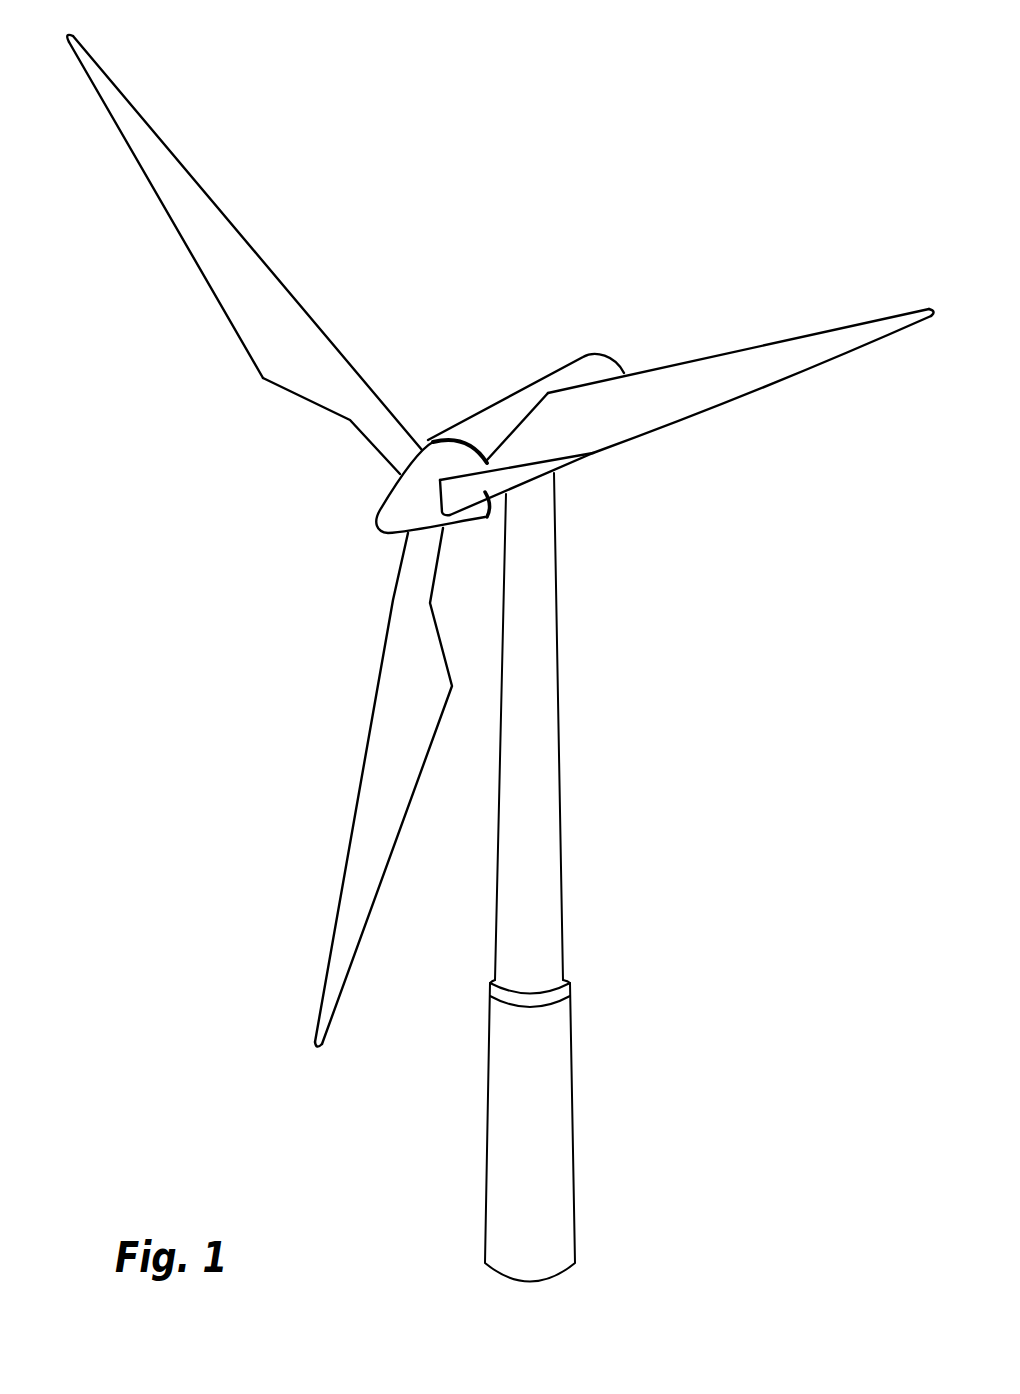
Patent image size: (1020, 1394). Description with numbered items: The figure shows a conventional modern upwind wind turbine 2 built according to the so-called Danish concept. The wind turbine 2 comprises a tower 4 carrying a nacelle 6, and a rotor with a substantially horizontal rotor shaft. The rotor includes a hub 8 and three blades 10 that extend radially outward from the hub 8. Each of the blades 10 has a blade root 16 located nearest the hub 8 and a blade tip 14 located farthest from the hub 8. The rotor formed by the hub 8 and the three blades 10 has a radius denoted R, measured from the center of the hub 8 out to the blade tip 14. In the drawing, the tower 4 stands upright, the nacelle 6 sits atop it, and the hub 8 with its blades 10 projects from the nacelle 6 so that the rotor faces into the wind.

The wind turbine 2 is at (672, 815).
The tower 4 is at (548, 733).
The nacelle 6 is at (492, 420).
The hub 8 is at (396, 507).
The blades 10 is at (278, 350).
The blade tip 14 is at (112, 97).
The blade root 16 is at (404, 460).